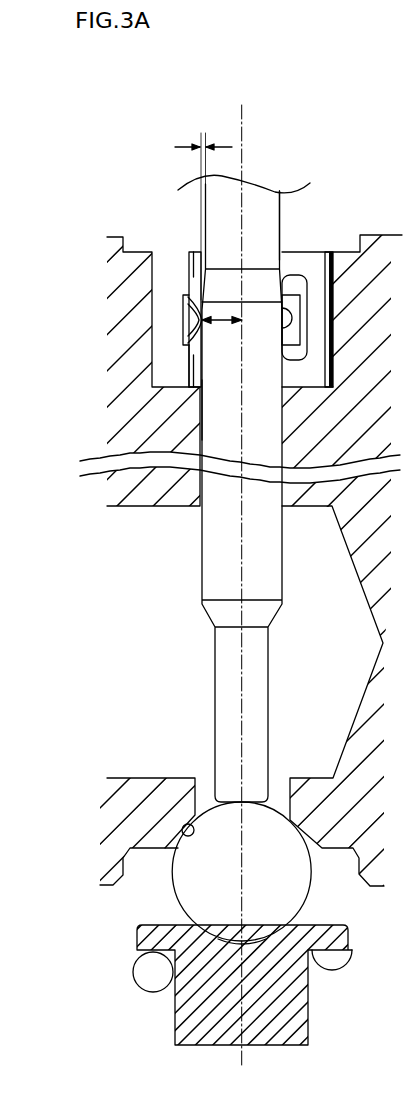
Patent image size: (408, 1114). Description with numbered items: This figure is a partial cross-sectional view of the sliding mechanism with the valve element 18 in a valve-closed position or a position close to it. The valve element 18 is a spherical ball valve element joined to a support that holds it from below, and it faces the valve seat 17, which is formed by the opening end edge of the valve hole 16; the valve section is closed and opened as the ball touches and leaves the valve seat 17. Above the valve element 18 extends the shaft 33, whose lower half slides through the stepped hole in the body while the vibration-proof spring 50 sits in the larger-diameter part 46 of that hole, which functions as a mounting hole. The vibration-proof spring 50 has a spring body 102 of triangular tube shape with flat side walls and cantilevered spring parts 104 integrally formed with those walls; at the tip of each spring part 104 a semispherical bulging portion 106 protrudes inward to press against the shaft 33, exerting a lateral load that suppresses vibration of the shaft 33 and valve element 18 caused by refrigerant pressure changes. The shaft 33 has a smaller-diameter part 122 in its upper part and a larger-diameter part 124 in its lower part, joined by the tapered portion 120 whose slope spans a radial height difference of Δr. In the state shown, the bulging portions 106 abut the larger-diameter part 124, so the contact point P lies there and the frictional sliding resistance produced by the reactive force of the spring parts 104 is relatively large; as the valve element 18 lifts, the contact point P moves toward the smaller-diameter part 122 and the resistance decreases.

The valve hole 16 is at (199, 786).
The valve seat 17 is at (184, 826).
The valve element 18 is at (176, 847).
The shaft 33 is at (193, 556).
The larger-diameter part 46 is at (150, 261).
The vibration-proof spring 50 is at (342, 278).
The spring body 102 is at (189, 268).
The spring part 104 is at (196, 322).
The bulging portion 106 is at (190, 347).
The tapered portion 120 is at (284, 290).
The smaller-diameter part 122 is at (280, 217).
The larger-diameter part 124 is at (202, 407).
The contact point P is at (197, 303).